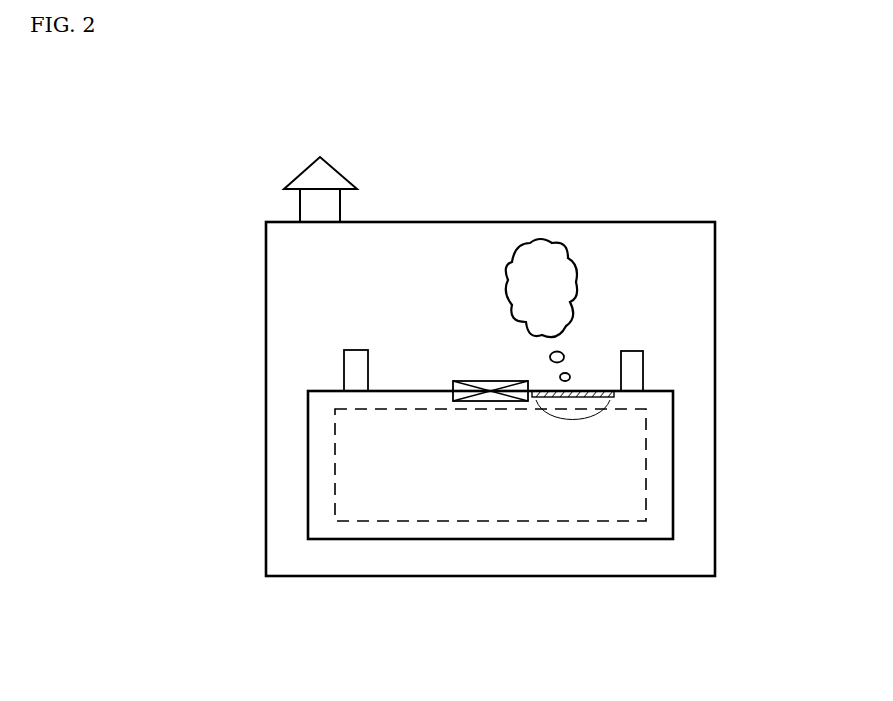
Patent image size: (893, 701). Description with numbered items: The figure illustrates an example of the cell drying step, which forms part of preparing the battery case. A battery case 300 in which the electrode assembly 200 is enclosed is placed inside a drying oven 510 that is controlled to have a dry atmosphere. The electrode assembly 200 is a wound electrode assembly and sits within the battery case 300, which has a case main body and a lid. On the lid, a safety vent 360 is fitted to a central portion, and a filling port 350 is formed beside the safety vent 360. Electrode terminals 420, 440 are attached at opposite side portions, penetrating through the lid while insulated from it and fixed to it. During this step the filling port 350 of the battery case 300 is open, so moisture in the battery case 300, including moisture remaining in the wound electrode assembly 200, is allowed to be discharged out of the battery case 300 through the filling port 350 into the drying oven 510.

The drying oven 510 is at (715, 257).
The battery case 300 is at (680, 437).
The electrode assembly 200 is at (646, 494).
The electrode terminal 420 is at (353, 350).
The electrode terminal 440 is at (644, 360).
The safety vent 360 is at (472, 381).
The filling port 350 is at (583, 376).